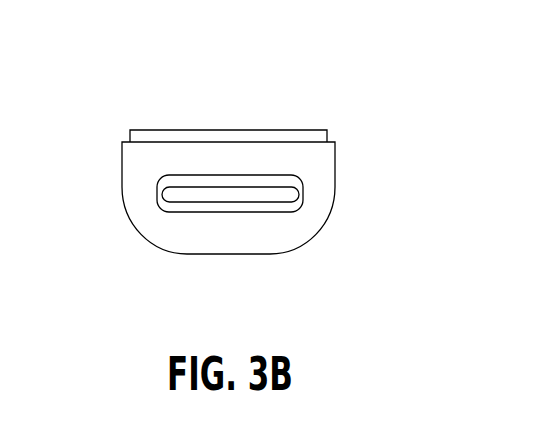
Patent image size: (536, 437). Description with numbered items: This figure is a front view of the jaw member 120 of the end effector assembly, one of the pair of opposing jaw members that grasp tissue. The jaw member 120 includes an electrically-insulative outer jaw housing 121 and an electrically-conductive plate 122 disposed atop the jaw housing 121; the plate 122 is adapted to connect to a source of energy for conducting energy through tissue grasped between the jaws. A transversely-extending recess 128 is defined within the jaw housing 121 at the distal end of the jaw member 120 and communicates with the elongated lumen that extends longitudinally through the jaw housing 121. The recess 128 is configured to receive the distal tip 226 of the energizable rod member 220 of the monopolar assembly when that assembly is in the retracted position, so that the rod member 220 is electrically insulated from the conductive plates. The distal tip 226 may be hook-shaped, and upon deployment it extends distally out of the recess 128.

The jaw member 120 is at (322, 73).
The jaw housing 121 is at (193, 255).
The plate 122 is at (250, 130).
The recess 128 is at (187, 178).
The energizable rod member 220 is at (273, 207).
The distal tip 226 is at (228, 202).